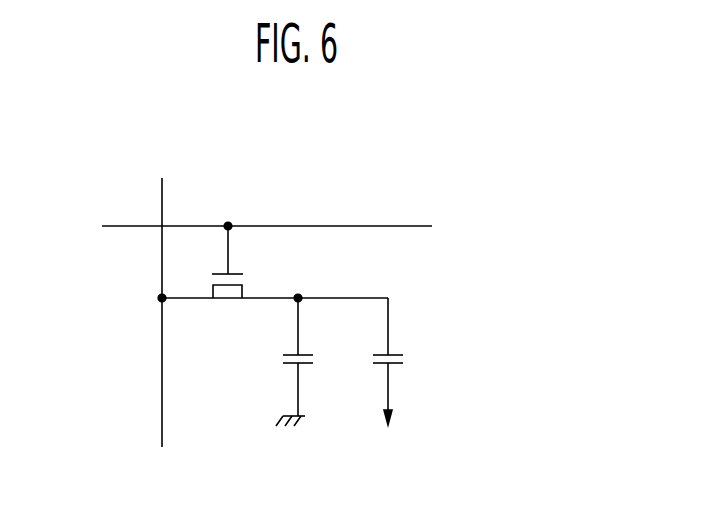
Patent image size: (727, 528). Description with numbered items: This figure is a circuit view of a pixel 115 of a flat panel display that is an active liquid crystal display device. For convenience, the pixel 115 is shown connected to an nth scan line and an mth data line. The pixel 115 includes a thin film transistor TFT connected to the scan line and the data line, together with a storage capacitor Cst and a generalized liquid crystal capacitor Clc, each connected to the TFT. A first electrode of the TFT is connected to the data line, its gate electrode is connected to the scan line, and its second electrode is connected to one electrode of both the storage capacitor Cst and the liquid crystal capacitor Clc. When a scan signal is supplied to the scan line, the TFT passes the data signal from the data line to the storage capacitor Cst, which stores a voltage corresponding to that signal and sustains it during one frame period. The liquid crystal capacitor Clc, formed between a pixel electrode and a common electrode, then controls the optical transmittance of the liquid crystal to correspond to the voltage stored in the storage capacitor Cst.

The pixel 115 is at (420, 155).
The thin film transistor TFT is at (273, 277).
The storage capacitor Cst is at (313, 362).
The liquid crystal capacitor Clc is at (400, 375).